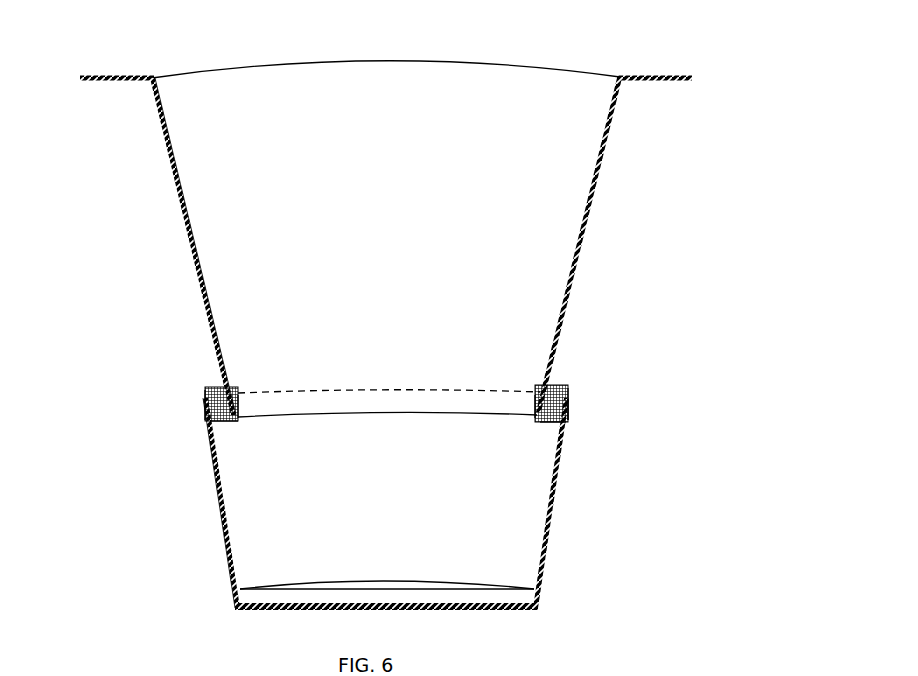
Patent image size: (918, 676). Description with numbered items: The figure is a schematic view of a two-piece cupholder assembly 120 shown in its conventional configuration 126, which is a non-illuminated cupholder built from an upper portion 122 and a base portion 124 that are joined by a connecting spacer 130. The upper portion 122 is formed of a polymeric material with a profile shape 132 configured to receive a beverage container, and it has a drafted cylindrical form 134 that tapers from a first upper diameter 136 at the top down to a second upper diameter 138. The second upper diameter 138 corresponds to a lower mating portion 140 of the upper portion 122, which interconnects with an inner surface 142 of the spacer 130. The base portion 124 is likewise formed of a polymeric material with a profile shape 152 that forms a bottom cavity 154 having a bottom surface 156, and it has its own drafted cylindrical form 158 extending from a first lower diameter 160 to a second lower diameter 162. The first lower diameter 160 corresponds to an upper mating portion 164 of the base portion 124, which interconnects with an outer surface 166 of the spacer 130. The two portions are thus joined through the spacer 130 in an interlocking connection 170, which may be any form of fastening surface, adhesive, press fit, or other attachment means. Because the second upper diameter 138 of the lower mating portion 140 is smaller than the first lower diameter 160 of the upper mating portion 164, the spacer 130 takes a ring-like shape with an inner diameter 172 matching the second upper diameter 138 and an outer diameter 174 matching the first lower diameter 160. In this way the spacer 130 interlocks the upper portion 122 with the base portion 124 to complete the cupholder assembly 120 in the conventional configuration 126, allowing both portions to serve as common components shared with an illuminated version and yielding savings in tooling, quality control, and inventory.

The cupholder assembly 120 is at (581, 42).
The conventional configuration 126 is at (386, 55).
The first upper diameter 136 is at (241, 66).
The upper portion 122 is at (596, 204).
The profile shape 132 is at (164, 182).
The drafted cylindrical form 134 is at (195, 246).
The base portion 124 is at (556, 490).
The profile shape 152 is at (211, 541).
The drafted cylindrical form 158 is at (219, 503).
The bottom surface 156 is at (399, 585).
The second lower diameter 162 is at (345, 582).
The bottom cavity 154 is at (404, 527).
The second upper diameter 138 is at (303, 418).
The first lower diameter 160 is at (373, 389).
The connecting spacer 130 is at (212, 387).
The outer surface 166 is at (205, 403).
The inner surface 142 is at (230, 416).
The lower mating portion 140 is at (247, 404).
The interlocking connection 170 is at (581, 397).
The inner diameter 172 is at (532, 407).
The upper mating portion 164 is at (554, 423).
The outer diameter 174 is at (566, 416).